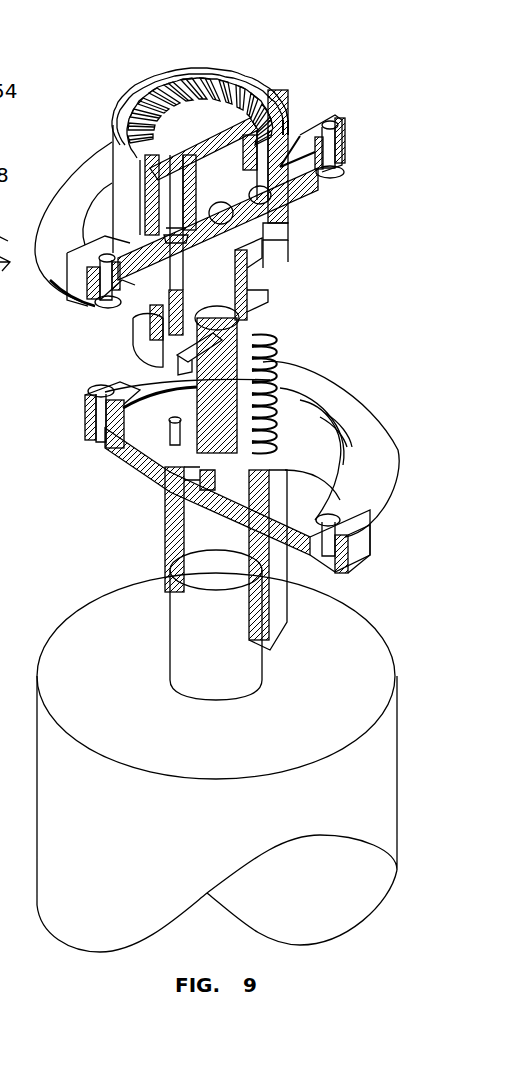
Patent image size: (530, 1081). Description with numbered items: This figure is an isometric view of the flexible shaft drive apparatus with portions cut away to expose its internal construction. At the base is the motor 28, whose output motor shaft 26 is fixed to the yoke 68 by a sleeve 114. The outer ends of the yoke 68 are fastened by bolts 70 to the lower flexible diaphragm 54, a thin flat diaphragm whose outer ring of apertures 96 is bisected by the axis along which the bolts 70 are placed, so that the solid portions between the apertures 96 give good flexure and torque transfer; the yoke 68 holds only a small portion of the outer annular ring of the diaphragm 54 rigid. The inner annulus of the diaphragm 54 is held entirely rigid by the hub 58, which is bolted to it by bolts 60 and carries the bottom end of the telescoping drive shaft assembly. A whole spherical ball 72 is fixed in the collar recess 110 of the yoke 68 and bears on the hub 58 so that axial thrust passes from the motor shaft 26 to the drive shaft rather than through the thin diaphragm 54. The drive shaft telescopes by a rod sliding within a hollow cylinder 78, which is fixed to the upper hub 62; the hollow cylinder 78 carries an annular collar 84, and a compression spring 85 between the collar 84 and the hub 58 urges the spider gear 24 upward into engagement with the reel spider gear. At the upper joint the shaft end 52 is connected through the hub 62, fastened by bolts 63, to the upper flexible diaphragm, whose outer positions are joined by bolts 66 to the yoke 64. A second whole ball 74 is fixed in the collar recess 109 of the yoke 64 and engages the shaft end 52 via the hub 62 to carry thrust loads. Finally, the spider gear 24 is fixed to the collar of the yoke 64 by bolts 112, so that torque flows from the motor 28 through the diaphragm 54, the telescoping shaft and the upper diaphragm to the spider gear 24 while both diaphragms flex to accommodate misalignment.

The spider gear 24 is at (222, 80).
The bolts 112 is at (268, 160).
The yoke 64 is at (345, 128).
The bolts 66 is at (345, 173).
The shaft end 52 is at (290, 190).
The hub 62 is at (287, 218).
The bolts 63 is at (270, 244).
The collar recess 109 is at (268, 258).
The ball 74 is at (209, 345).
The hollow cylinder 78 is at (152, 332).
The collar 84 is at (140, 352).
The compression spring 85 is at (256, 346).
The flexible diaphragm 54 is at (308, 366).
The hub 58 is at (326, 408).
The bolts 70 is at (88, 435).
The bolts 60 is at (137, 442).
The ball 72 is at (166, 478).
The collar recess 110 is at (166, 520).
The yoke 68 is at (368, 560).
The motor shaft 26 is at (171, 655).
The sleeve 114 is at (288, 619).
The motor 28 is at (60, 941).
The apertures 96 is at (10, 126).